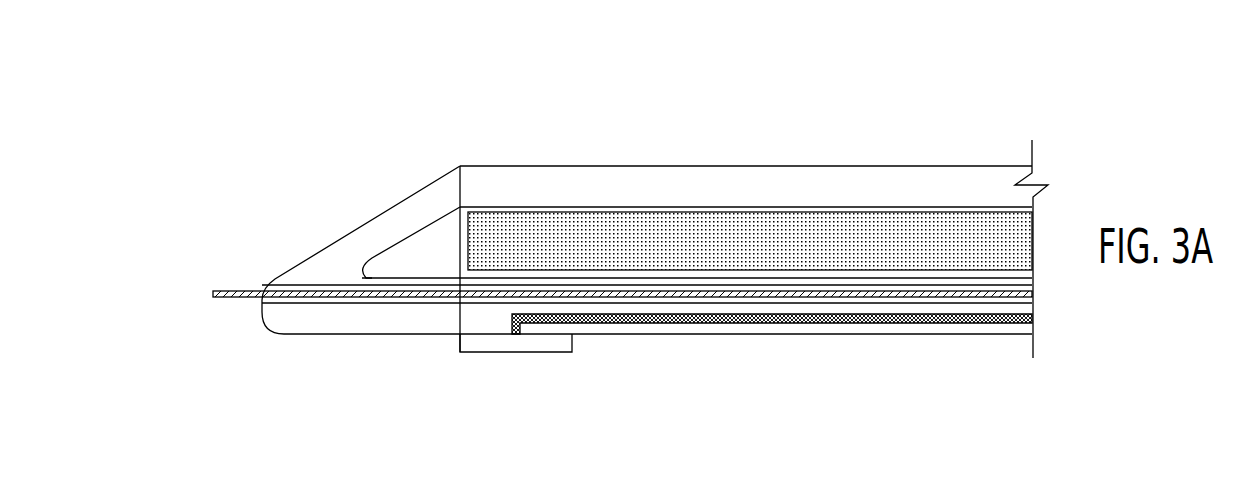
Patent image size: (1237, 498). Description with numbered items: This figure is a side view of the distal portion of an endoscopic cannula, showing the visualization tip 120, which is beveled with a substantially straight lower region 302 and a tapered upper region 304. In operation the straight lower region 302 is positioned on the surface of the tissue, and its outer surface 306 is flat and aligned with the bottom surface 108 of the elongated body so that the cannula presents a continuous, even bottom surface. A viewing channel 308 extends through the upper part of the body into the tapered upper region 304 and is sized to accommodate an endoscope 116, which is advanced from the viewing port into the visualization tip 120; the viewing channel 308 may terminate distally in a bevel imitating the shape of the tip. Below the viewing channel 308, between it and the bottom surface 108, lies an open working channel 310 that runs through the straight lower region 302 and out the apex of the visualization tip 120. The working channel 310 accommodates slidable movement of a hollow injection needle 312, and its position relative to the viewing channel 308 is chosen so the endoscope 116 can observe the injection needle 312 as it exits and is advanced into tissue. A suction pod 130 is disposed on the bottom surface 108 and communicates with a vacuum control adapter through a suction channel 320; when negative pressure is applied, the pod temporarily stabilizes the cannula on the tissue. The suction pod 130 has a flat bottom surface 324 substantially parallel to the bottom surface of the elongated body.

The visualization tip 120 is at (363, 187).
The tapered upper region 304 is at (350, 248).
The straight lower region 302 is at (347, 318).
The outer surface 306 is at (382, 335).
The bottom surface 324 is at (512, 352).
The suction pod 130 is at (572, 343).
The suction channel 320 is at (700, 315).
The bottom surface 108 is at (838, 335).
The working channel 310 is at (967, 303).
The injection needle 312 is at (993, 293).
The endoscope 116 is at (615, 215).
The viewing channel 308 is at (962, 205).